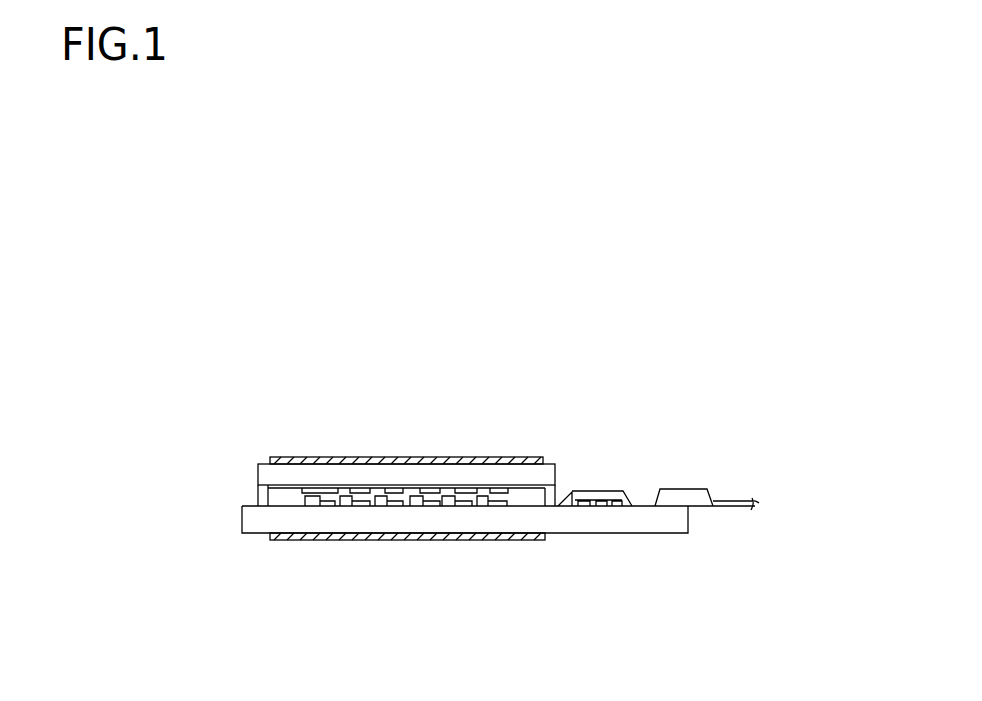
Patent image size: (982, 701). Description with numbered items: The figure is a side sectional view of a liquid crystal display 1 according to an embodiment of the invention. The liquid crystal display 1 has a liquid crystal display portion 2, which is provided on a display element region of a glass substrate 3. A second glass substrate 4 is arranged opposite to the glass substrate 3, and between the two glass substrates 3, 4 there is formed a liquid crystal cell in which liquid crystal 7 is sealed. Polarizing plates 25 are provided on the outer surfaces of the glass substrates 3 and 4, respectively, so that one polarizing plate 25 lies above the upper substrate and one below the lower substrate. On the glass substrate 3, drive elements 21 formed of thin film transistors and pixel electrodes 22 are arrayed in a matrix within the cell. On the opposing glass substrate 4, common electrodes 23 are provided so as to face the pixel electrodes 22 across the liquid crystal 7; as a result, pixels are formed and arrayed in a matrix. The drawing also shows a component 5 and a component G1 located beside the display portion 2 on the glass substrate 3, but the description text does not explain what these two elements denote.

The liquid crystal display 1 is at (707, 368).
The liquid crystal display portion 2 is at (499, 446).
The glass substrate 3 is at (250, 525).
The glass substrate 4 is at (258, 476).
The electronic component 5 is at (689, 488).
The liquid crystal 7 is at (284, 493).
The drive elements 21 is at (308, 506).
The pixel electrodes 22 is at (332, 508).
The common electrodes 23 is at (330, 490).
The polarizing plates 25 is at (404, 457).
The IC chip G1 is at (611, 490).